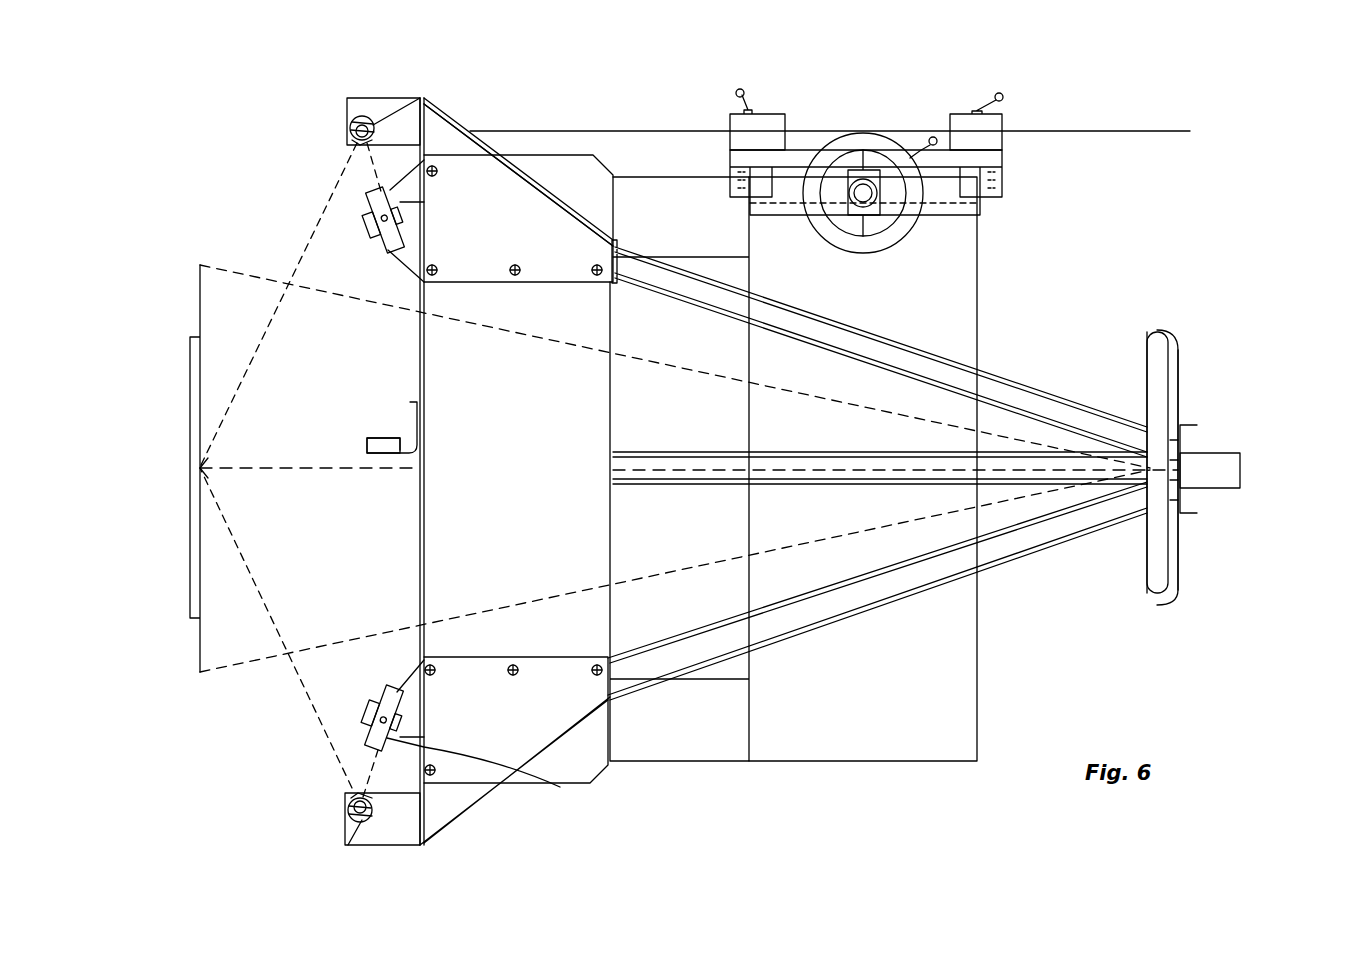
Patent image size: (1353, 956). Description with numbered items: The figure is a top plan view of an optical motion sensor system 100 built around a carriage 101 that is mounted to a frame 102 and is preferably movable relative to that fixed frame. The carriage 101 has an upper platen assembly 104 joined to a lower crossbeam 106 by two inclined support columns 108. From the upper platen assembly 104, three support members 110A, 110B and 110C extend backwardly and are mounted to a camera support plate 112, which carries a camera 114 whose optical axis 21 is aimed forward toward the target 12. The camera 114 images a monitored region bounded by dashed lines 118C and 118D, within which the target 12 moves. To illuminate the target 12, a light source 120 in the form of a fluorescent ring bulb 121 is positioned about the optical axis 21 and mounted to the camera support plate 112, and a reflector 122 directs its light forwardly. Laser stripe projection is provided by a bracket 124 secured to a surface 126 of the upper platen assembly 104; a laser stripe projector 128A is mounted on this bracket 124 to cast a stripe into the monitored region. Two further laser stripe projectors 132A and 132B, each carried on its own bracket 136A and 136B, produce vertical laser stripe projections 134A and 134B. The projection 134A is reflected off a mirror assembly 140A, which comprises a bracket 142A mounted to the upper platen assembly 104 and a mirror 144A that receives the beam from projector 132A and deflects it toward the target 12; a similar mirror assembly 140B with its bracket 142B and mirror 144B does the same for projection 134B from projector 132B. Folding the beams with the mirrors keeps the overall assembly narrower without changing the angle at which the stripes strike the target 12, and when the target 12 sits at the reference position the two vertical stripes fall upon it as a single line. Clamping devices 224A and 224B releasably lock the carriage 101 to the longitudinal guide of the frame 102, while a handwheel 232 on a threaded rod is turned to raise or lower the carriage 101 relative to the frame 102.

The target 12 is at (200, 347).
The optical axis 21 is at (288, 472).
The optical motion sensor system 100 is at (1168, 230).
The carriage 101 is at (1052, 347).
The frame 102 is at (1105, 132).
The upper platen assembly 104 is at (515, 805).
The lower crossbeam 106 is at (900, 762).
The inclined support columns 108 is at (663, 177).
The support member 110A is at (652, 452).
The support member 110B is at (995, 375).
The support member 110C is at (1005, 560).
The camera support plate 112 is at (1198, 430).
The camera 114 is at (1242, 470).
The dashed line 118C is at (225, 265).
The dashed line 118D is at (250, 668).
The light source 120 is at (1198, 322).
The fluorescent ring bulb 121 is at (1147, 376).
The reflector 122 is at (1180, 383).
The bracket 124 is at (424, 412).
The surface 126 is at (420, 523).
The laser stripe projector 128A is at (378, 438).
The laser stripe projector 132A is at (433, 140).
The laser stripe projector 132B is at (560, 787).
The vertical laser stripe projection 134A is at (322, 210).
The vertical laser stripe projection 134B is at (302, 772).
The bracket 136A is at (393, 690).
The bracket 136B is at (378, 246).
The mirror assembly 140A is at (364, 99).
The mirror assembly 140B is at (320, 823).
The bracket 142A is at (410, 98).
The bracket 142B is at (400, 845).
The mirror 144A is at (378, 123).
The mirror 144B is at (357, 830).
The clamping device 224A is at (781, 105).
The clamping device 224B is at (1022, 96).
The handwheel 232 is at (868, 132).